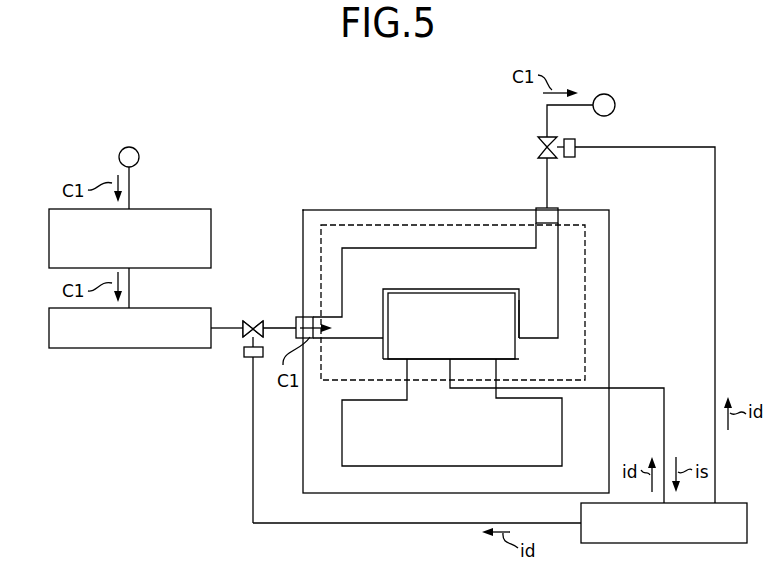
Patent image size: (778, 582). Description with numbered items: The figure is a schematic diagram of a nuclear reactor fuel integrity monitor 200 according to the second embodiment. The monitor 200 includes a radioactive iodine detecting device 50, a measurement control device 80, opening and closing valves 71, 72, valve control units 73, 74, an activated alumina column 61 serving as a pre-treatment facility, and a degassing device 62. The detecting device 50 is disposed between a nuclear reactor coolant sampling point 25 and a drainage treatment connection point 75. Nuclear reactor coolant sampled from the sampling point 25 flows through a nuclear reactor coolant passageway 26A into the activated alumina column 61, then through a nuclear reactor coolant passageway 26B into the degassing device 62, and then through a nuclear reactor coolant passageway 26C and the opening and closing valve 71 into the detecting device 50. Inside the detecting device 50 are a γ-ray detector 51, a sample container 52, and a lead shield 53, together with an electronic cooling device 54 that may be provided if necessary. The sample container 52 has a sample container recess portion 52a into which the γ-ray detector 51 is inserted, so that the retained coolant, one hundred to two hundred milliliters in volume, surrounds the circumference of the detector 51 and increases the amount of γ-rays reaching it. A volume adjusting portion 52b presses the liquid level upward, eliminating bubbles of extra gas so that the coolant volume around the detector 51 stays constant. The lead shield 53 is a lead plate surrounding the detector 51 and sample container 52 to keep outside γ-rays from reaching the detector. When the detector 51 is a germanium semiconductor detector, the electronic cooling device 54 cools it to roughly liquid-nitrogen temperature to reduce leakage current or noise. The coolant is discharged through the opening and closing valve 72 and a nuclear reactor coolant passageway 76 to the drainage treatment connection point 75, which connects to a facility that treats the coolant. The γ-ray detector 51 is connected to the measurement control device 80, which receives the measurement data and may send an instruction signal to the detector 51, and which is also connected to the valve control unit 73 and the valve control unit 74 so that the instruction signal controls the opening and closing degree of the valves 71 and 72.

The nuclear reactor fuel integrity monitor 200 is at (340, 183).
The nuclear reactor coolant sampling point 25 is at (151, 145).
The nuclear reactor coolant passageway 26A is at (132, 188).
The nuclear reactor coolant passageway 26B is at (132, 288).
The nuclear reactor coolant passageway 26C is at (233, 326).
The activated alumina column 61 is at (48, 240).
The degassing device 62 is at (48, 328).
The opening and closing valve 71 is at (253, 321).
The valve control unit 73 is at (250, 358).
The radioactive iodine detecting device 50 is at (431, 201).
The γ-ray detector 51 is at (384, 350).
The sample container 52 is at (410, 248).
The sample container recess portion 52a is at (519, 318).
The volume adjusting portion 52b is at (535, 212).
The lead shield 53 is at (585, 252).
The electronic cooling device 54 is at (485, 467).
The opening and closing valve 72 is at (537, 148).
The valve control unit 74 is at (568, 139).
The drainage treatment connection point 75 is at (611, 98).
The nuclear reactor coolant passageway 76 is at (545, 112).
The measurement control device 80 is at (730, 503).